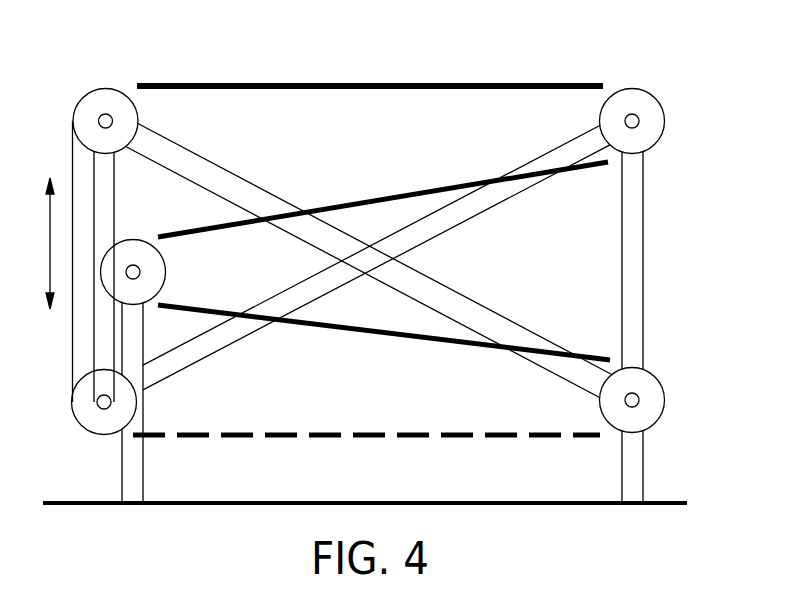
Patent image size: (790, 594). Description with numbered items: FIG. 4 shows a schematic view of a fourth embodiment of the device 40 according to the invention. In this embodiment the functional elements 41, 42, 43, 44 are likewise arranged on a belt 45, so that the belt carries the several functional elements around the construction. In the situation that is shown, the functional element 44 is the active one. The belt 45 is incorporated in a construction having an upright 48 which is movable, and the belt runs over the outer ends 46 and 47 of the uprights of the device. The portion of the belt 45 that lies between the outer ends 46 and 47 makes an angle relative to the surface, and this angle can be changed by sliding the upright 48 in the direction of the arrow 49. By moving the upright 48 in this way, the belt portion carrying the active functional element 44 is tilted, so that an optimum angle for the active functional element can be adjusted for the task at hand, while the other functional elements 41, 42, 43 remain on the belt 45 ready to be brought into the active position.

The device 40 is at (660, 60).
The functional element 41 is at (408, 440).
The functional element 42 is at (585, 356).
The functional element 43 is at (242, 227).
The functional element 44 is at (366, 83).
The belt 45 is at (378, 90).
The outer end 46 is at (653, 122).
The outer end 47 is at (78, 118).
The upright 48 is at (100, 340).
The arrow 49 is at (50, 244).